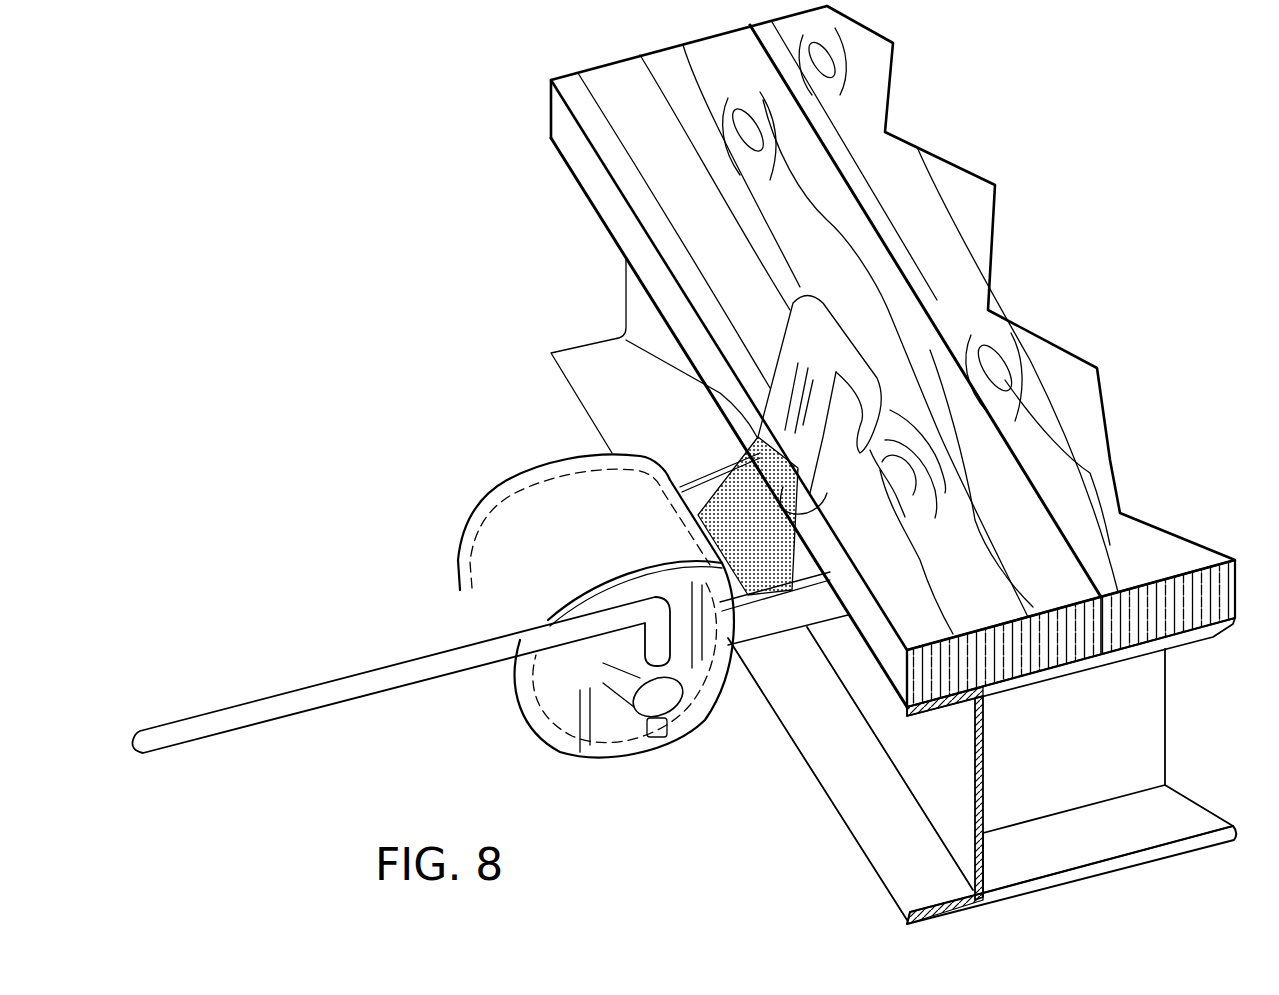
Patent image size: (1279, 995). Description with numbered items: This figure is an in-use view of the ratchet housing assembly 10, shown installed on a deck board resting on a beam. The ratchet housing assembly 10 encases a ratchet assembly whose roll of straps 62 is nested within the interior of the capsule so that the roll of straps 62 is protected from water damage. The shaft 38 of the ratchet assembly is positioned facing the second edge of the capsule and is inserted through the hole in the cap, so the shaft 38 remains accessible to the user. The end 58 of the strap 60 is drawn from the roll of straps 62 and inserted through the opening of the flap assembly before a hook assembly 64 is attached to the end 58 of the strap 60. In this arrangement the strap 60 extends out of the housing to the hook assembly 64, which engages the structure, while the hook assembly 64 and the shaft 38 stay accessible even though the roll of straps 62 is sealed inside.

The ratchet housing assembly 10 is at (485, 435).
The shaft 38 is at (665, 705).
The end 58 is at (603, 337).
The strap 60 is at (760, 575).
The roll of straps 62 is at (515, 552).
The hook assembly 64 is at (827, 347).